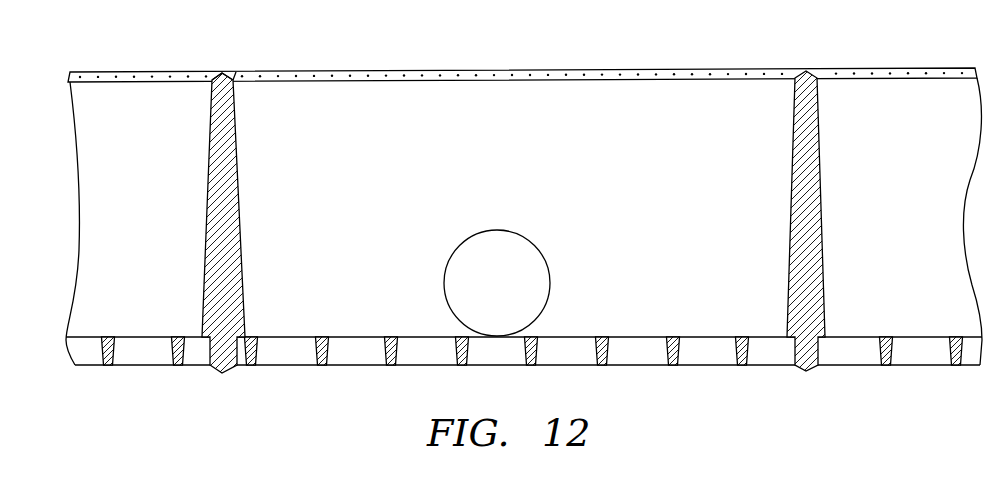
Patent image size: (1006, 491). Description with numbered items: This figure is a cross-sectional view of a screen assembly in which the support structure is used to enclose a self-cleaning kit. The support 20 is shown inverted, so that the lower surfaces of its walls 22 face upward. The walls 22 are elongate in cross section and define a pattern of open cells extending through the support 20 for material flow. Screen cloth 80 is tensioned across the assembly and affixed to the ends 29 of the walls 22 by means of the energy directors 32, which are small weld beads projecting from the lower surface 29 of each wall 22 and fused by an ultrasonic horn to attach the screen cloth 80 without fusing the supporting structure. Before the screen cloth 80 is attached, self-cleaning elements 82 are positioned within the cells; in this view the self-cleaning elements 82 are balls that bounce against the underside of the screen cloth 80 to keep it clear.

The support 20 is at (78, 232).
The walls 22 is at (242, 210).
The lower surface 29 is at (234, 73).
The energy director 32 is at (224, 72).
The screen cloth 80 is at (427, 70).
The self-cleaning elements 82 is at (513, 230).